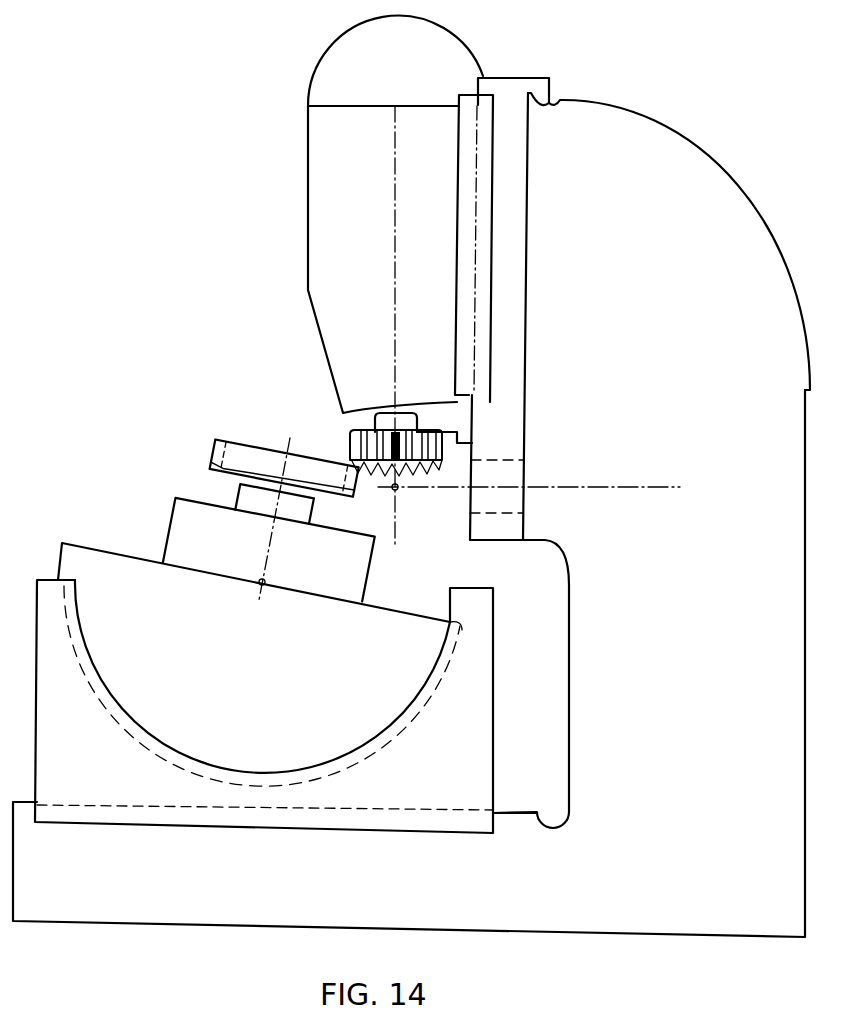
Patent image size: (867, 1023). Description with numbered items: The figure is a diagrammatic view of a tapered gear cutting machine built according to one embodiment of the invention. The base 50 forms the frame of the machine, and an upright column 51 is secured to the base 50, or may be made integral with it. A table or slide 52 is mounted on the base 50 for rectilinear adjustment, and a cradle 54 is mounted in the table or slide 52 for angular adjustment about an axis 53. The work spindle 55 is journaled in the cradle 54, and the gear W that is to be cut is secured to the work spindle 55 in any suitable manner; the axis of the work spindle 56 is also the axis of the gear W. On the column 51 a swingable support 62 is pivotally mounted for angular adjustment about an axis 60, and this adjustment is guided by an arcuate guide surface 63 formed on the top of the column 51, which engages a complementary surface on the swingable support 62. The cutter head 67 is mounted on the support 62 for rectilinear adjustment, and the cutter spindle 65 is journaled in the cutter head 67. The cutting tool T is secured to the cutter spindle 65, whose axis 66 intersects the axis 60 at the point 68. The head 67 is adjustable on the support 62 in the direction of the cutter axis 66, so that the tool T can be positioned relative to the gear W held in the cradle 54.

The base 50 is at (243, 919).
The column 51 is at (712, 196).
The table or slide 52 is at (493, 758).
The axis 53 is at (268, 581).
The cradle 54 is at (118, 573).
The work spindle 55 is at (250, 501).
The axis of the work spindle 56 is at (270, 533).
The axis 60 is at (577, 487).
The swingable support 62 is at (508, 413).
The arcuate guide surface 63 is at (537, 103).
The cutter spindle 65 is at (372, 418).
The axis of the cutter spindle 66 is at (397, 323).
The cutter head 67 is at (330, 280).
The point 68 is at (397, 490).
The cutting tool T is at (352, 447).
The gear W is at (253, 460).